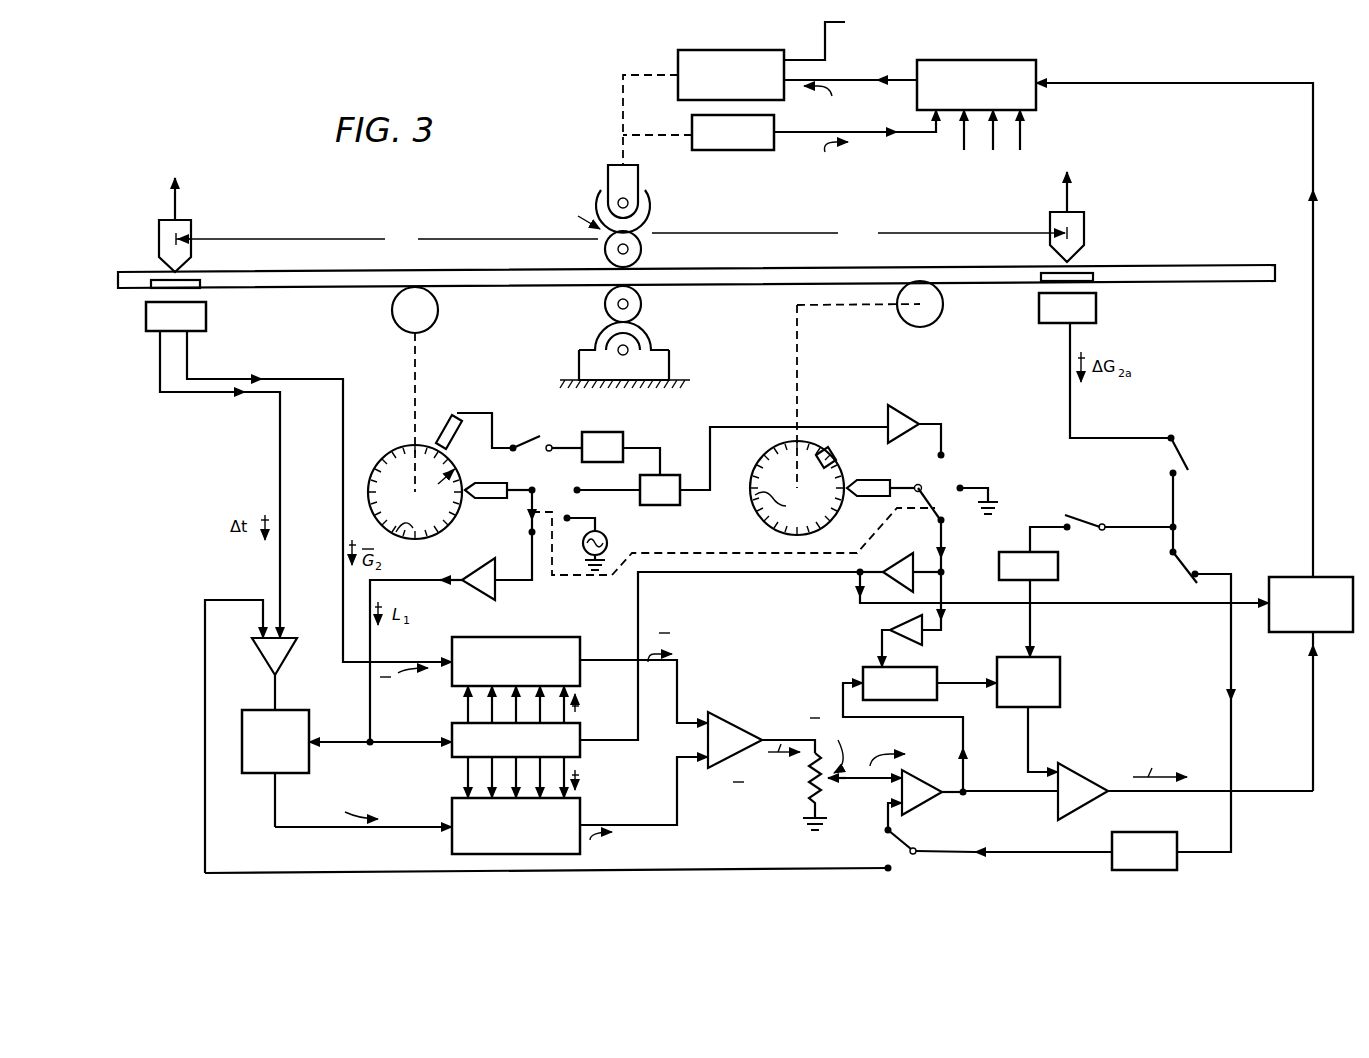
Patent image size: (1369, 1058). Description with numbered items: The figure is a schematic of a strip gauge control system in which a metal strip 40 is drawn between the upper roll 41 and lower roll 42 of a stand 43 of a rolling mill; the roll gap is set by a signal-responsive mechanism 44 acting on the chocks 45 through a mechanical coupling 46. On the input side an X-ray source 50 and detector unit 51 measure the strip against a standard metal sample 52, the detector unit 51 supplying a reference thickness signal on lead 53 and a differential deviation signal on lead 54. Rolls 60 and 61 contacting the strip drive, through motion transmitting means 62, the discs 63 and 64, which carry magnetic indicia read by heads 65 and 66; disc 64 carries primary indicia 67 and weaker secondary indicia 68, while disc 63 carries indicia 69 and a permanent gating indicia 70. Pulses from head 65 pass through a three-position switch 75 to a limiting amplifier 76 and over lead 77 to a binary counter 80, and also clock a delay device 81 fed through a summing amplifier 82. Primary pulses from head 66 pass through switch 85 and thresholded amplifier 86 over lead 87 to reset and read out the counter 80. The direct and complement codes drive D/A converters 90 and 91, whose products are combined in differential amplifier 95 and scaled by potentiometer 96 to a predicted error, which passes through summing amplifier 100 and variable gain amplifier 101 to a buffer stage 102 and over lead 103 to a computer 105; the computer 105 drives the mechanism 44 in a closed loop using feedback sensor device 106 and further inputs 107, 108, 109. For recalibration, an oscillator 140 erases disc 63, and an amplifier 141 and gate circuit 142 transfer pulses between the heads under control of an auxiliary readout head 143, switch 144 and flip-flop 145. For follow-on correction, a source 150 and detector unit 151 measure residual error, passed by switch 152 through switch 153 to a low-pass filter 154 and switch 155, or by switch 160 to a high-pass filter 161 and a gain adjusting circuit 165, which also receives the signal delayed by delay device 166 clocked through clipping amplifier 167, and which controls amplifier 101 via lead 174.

The metal strip 40 is at (502, 283).
The upper roll 41 is at (641, 258).
The lower roll 42 is at (641, 304).
The stand 43 is at (574, 214).
The signal-responsive mechanism 44 is at (678, 62).
The chocks 45 is at (608, 172).
The mechanical coupling 46 is at (620, 150).
The X-ray source 50 is at (159, 232).
The X-ray detector unit 51 is at (208, 316).
The standard metal sample 52 is at (189, 281).
The lead 53 is at (343, 478).
The lead 54 is at (280, 460).
The roll 60 is at (392, 313).
The roll 61 is at (940, 310).
The motion transmitting means 62 is at (415, 355).
The disc 63 is at (404, 449).
The disc 64 is at (765, 458).
The read head 65 is at (490, 483).
The read head 66 is at (862, 480).
The primary indicia 67 is at (829, 452).
The secondary indicia 68 is at (783, 506).
The indicia 69 is at (413, 528).
The permanent gating indicia 70 is at (435, 490).
The three-position switch 75 is at (528, 507).
The limiting amplifier 76 is at (496, 588).
The lead 77 is at (425, 742).
The binary counter 80 is at (452, 757).
The delay device 81 is at (309, 720).
The summing amplifier 82 is at (265, 655).
The three-position switch 85 is at (938, 488).
The amplifier 86 is at (886, 560).
The lead 87 is at (790, 578).
The D/A converter 90 is at (452, 838).
The D/A converter 91 is at (530, 637).
The differential amplifier 95 is at (727, 715).
The potentiometer 96 is at (806, 806).
The summing amplifier 100 is at (930, 800).
The variable gain amplifier 101 is at (1052, 808).
The buffer stage 102 is at (1337, 575).
The lead 103 is at (1313, 362).
The computer 105 is at (1022, 60).
The feedback sensor device 106 is at (730, 150).
The input 107 is at (962, 135).
The input 108 is at (992, 135).
The input 109 is at (1022, 136).
The oscillator 140 is at (607, 543).
The amplifier 141 is at (897, 410).
The gate circuit 142 is at (676, 505).
The auxiliary readout head 143 is at (447, 424).
The switch 144 is at (538, 435).
The bistable flip-flop 145 is at (612, 432).
The source of X-rays 150 is at (1085, 222).
The X-ray detector unit 151 is at (1097, 310).
The switch 152 is at (1189, 456).
The switch 153 is at (1190, 564).
The low-pass filter 154 is at (1177, 860).
The switch 155 is at (883, 840).
The switch 160 is at (1083, 516).
The high-pass filter 161 is at (1058, 568).
The gain adjusting circuit 165 is at (1056, 657).
The delay device 166 is at (863, 668).
The clipping amplifier 167 is at (890, 626).
The lead 174 is at (1026, 730).